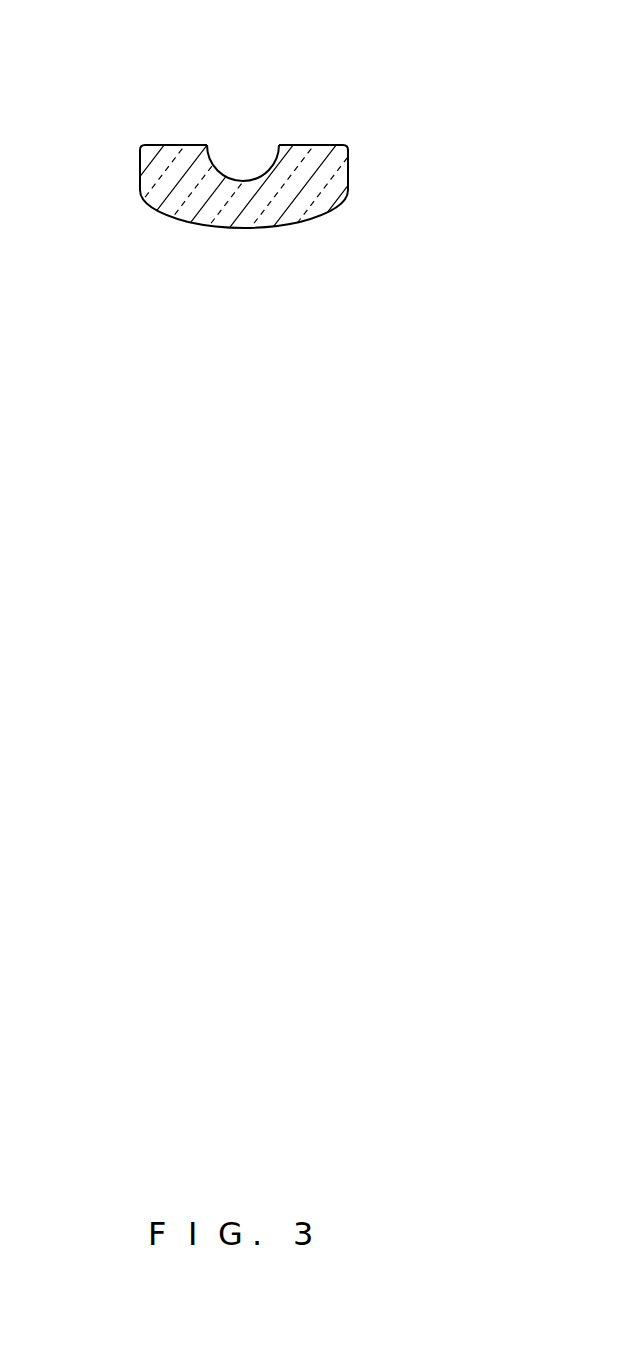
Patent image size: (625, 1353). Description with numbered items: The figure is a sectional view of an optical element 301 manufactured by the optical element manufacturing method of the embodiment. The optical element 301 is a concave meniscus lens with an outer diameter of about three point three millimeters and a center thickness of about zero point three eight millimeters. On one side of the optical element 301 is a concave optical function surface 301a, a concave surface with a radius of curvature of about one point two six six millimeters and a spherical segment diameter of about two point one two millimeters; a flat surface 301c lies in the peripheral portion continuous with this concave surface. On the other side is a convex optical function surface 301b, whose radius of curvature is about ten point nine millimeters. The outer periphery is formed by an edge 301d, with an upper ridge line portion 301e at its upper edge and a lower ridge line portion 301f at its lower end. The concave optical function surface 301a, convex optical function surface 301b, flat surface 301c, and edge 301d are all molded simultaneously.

The optical element 301 is at (127, 93).
The concave optical function surface 301a is at (278, 158).
The convex optical function surface 301b is at (250, 227).
The flat surface 301c is at (310, 146).
The edge 301d is at (348, 168).
The upper ridge line portion 301e is at (143, 147).
The lower ridge line portion 301f is at (140, 197).